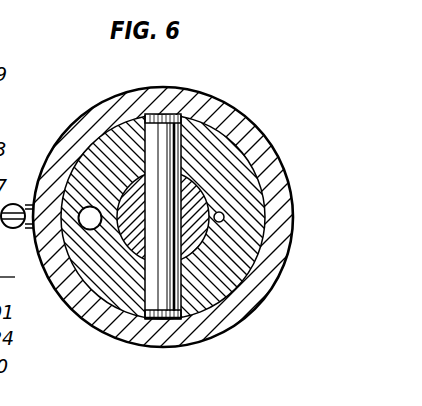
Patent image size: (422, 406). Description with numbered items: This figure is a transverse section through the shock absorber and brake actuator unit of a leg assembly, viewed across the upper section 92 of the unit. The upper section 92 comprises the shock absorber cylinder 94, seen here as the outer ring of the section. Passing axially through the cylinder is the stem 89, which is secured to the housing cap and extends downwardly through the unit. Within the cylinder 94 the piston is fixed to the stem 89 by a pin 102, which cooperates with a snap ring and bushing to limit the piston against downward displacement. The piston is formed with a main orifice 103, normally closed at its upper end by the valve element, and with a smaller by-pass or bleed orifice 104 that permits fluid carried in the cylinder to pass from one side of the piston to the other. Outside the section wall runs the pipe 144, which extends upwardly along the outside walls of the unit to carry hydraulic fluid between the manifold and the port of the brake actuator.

The stem 89 is at (133, 202).
The upper section 92 is at (249, 120).
The shock absorber cylinder 94 is at (264, 228).
The pin 102 is at (158, 137).
The main orifice 103 is at (82, 228).
The by-pass orifice 104 is at (224, 216).
The pipe 144 is at (15, 229).